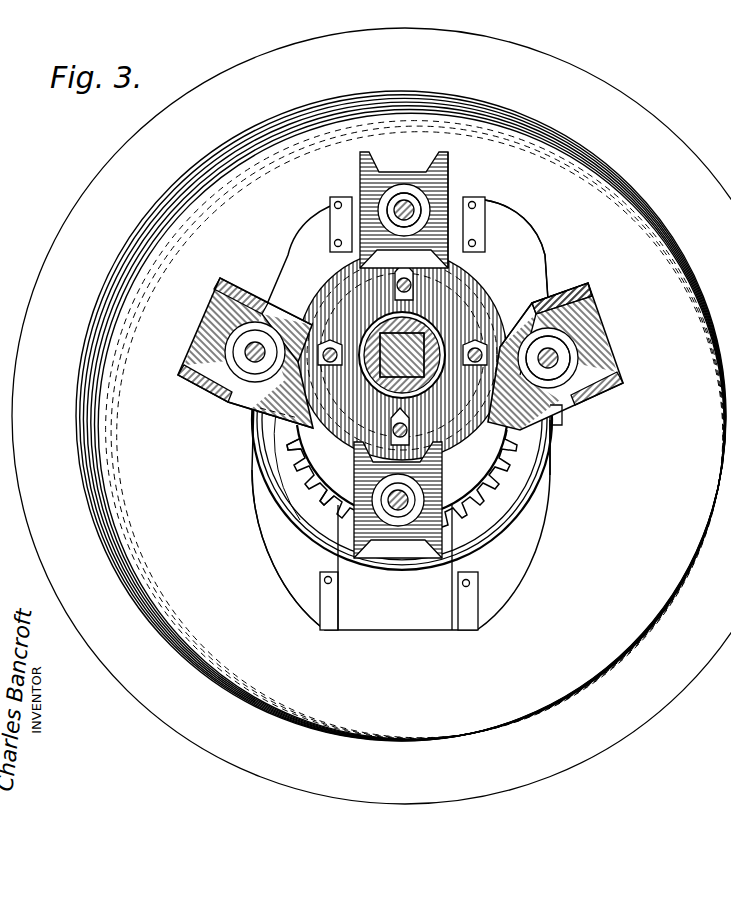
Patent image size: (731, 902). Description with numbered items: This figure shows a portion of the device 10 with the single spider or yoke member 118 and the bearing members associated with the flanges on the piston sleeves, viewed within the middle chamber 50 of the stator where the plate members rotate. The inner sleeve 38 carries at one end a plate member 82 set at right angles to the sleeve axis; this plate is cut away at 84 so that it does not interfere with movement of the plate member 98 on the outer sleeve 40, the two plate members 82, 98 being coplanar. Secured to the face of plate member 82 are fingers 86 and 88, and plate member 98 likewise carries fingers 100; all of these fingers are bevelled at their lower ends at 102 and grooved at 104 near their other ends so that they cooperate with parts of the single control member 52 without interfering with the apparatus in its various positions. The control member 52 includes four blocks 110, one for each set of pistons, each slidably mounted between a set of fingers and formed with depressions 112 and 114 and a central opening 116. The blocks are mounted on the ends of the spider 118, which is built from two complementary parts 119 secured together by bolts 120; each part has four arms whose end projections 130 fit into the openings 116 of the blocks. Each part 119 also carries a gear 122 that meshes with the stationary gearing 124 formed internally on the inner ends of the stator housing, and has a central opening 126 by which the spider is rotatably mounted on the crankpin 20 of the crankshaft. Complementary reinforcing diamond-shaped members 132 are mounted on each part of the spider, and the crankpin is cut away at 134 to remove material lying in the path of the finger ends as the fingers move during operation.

The wheel 10 is at (630, 100).
The hub shaft 20 is at (432, 330).
The inner sleeve 38 is at (250, 445).
The outer sleeve 40 is at (553, 455).
The middle chamber 50 is at (401, 416).
The single control member 52 is at (462, 182).
The plate member 82 is at (285, 248).
The cut away 84 is at (245, 400).
The finger 86 is at (490, 232).
The finger 88 is at (352, 212).
The plate member 98 is at (272, 560).
The fingers 100 is at (338, 632).
The bevel 102 is at (452, 495).
The groove 104 is at (360, 238).
The block 110 is at (380, 170).
The depression 112 is at (590, 325).
The depression 114 is at (320, 515).
The central opening 116 is at (232, 330).
The spider or yoke member 118 is at (489, 289).
The complementary part 119 is at (560, 420).
The bolts 120 is at (560, 360).
The gear 122 is at (402, 392).
The stationary gearing 124 is at (545, 505).
The central opening 126 is at (345, 430).
The projection 130 is at (410, 192).
The reinforcing diamond-shaped member 132 is at (595, 300).
The cut away 134 is at (465, 285).